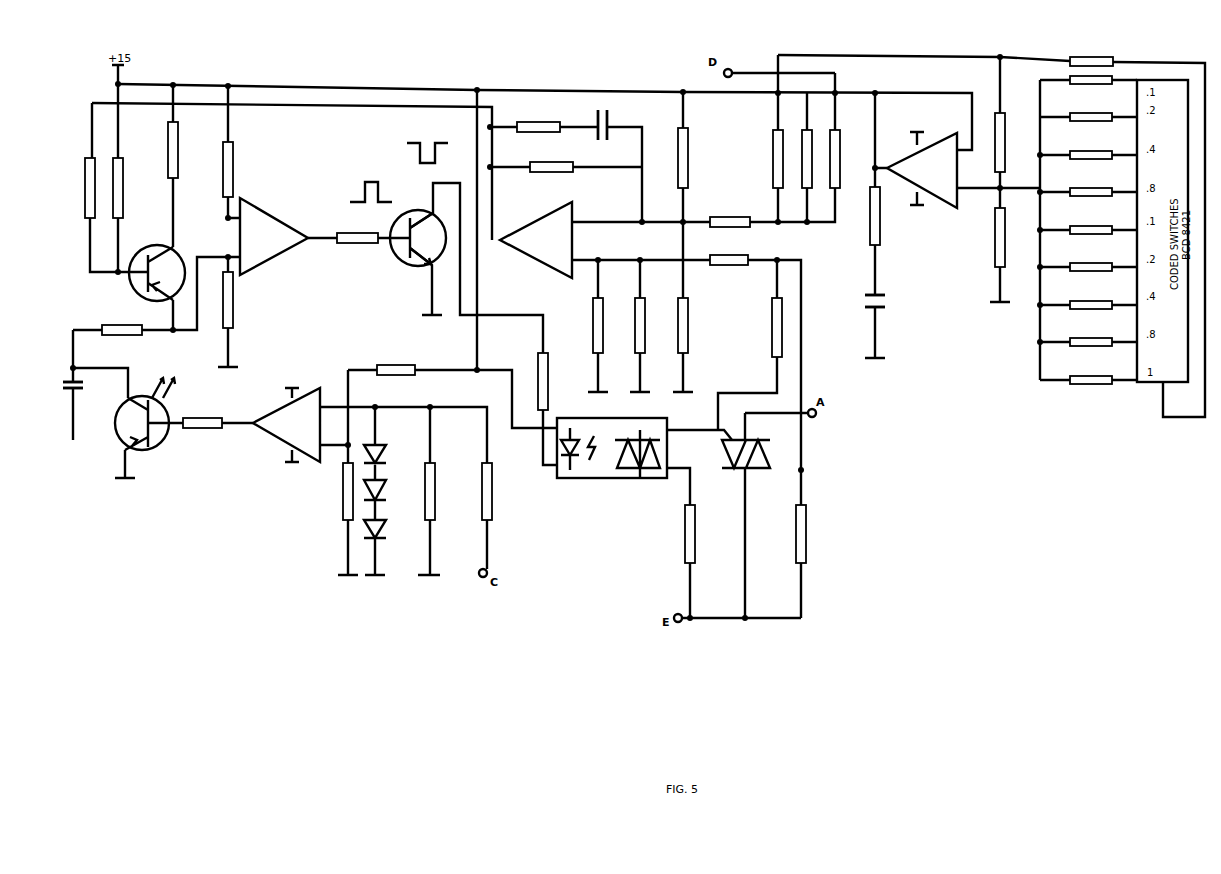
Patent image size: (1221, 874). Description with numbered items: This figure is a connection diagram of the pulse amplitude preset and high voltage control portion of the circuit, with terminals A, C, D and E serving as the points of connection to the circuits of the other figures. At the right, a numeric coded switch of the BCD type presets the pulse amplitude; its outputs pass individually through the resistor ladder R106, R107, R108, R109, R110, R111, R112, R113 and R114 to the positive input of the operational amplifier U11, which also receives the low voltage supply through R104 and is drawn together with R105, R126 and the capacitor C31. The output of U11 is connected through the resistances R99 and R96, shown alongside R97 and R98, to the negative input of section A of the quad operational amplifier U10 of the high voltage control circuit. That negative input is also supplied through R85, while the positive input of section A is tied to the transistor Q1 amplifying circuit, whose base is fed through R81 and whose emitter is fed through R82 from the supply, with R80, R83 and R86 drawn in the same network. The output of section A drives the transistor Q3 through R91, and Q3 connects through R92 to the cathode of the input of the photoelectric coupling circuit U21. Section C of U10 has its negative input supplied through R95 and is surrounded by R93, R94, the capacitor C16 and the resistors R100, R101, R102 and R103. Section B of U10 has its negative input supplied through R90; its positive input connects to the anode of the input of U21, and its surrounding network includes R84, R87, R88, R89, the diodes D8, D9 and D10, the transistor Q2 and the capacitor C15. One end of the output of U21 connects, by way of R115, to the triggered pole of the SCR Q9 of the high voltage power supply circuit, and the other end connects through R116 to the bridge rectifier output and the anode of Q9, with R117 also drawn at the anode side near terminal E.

The resistor 1.5K R80 is at (84, 188).
The resistance R81 is at (112, 189).
The resistance R82 is at (167, 155).
The resistor 220 R83 is at (123, 340).
The resistor 2.2K R84 is at (203, 416).
The resistance R85 is at (222, 173).
The resistor 4.7K R86 is at (222, 306).
The resistor 27K R87 is at (395, 379).
The resistor 1.8K R88 is at (342, 496).
The resistor 10K R89 is at (437, 496).
The resistance R90 is at (481, 496).
The resistor 2.2K R91 is at (361, 230).
The resistor 470 R92 is at (554, 381).
The resistor 18K R93 is at (541, 119).
The resistor 180K R94 is at (557, 159).
The resistance R95 is at (677, 161).
The resistance R96 is at (735, 214).
The resistor 28K R97 is at (772, 164).
The resistor 68K R98 is at (801, 164).
The resistance R99 is at (829, 164).
The resistor 49.9K R100 is at (592, 331).
The resistor 12.5K R101 is at (634, 331).
The resistor 10K R102 is at (677, 331).
The resistor 249K R103 is at (735, 252).
The resistance R104 is at (1015, 142).
The resistor 4.7K R105 is at (1015, 237).
The resistance R106 is at (1090, 56).
The resistance R107 is at (1095, 90).
The resistance R108 is at (1095, 128).
The resistance R109 is at (1095, 165).
The resistance R110 is at (1095, 203).
The resistor 49.9K R111 is at (1097, 240).
The resistance R112 is at (1097, 278).
The resistance R113 is at (1097, 315).
The resistance R114 is at (1092, 361).
The resistor 2K/.5W R115 is at (771, 341).
The resistance R116 is at (684, 547).
The resistor 470K R117 is at (795, 547).
The resistor 47 R126 is at (890, 216).
The capacitor 0.22u C15 is at (62, 406).
The capacitor 2.2u C16 is at (612, 124).
The capacitor 10u C31 is at (887, 298).
The transistor Q1 is at (177, 260).
The phototransistor 2N3904 Q2 is at (155, 436).
The transistor Q3 is at (411, 257).
The triac BTA12 Q9 is at (752, 462).
The diode 1N4007 D8 is at (393, 446).
The diode 1N4007 D9 is at (393, 484).
The diode 1N4007 D10 is at (393, 522).
The four operational amplifiers circuit U10 is at (406, 330).
The four operational amplifiers circuit U11 is at (922, 178).
The photoelectric coupling circuit U21 is at (612, 460).